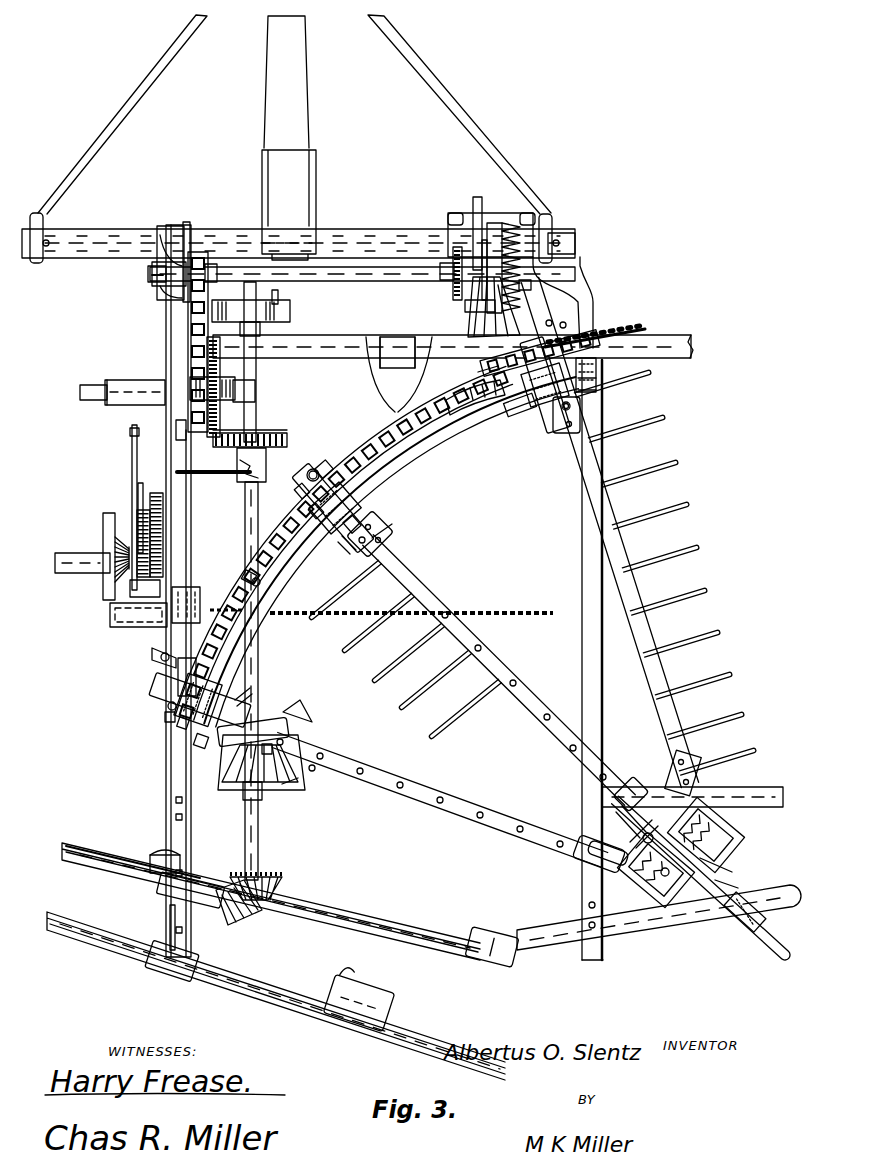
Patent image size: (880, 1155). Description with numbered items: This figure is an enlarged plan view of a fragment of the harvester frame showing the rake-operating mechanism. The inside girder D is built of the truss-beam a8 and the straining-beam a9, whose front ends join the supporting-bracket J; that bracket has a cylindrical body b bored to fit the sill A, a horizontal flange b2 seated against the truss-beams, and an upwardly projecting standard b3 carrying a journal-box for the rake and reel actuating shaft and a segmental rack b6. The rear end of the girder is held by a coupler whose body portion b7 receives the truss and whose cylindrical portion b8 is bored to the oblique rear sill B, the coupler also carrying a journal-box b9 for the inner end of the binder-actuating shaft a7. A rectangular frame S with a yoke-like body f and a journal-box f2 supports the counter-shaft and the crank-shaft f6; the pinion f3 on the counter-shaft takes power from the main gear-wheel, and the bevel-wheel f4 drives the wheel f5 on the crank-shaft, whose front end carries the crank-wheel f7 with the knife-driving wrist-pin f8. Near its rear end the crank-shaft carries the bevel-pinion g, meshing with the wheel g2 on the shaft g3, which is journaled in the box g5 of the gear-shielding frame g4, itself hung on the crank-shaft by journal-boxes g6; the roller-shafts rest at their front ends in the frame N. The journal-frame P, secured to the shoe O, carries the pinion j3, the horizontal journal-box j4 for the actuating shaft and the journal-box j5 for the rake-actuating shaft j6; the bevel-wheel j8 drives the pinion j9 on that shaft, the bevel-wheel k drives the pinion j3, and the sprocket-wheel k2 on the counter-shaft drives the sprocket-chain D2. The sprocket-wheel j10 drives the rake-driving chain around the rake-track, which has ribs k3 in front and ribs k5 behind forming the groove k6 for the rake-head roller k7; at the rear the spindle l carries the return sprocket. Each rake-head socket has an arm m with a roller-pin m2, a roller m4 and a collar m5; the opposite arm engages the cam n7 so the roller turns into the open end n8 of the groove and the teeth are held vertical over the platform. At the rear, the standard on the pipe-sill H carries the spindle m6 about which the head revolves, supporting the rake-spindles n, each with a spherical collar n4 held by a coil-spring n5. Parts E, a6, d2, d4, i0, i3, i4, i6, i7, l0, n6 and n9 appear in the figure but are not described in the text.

The sill A is at (382, 240).
The rear sill B is at (276, 996).
The inside girder D is at (167, 787).
The sprocket-chain D2 is at (186, 320).
The lower frame bar E is at (352, 896).
The rear pipe-sill H is at (632, 1000).
The supporting-bracket J is at (148, 268).
The frame N is at (784, 797).
The shoe O is at (563, 302).
The journal-frame P is at (470, 225).
The rectangular frame S is at (256, 392).
The drive shaft a6 is at (74, 572).
The binder-actuating shaft a7 is at (106, 860).
The truss-beam a8 is at (183, 594).
The straining-beam a9 is at (88, 385).
The cylindrical body portion b is at (170, 232).
The horizontal flange b2 is at (152, 276).
The standard b3 is at (162, 290).
The segmental rack b6 is at (186, 222).
The body portion b7 is at (182, 927).
The cylindrical portion b8 is at (165, 965).
The journal-box b9 is at (166, 890).
The clamp d2 is at (338, 997).
The rack d4 is at (588, 334).
The yoke-like body portion f is at (212, 388).
The journal-box f2 is at (258, 368).
The pinion f3 is at (190, 511).
The bevel-wheel f4 is at (213, 440).
The wheel f5 is at (272, 440).
The crank-shaft f6 is at (245, 514).
The crank-wheel f7 is at (240, 304).
The knife-driving wrist-pin f8 is at (280, 294).
The bevel-pinion g is at (226, 752).
The wheel g2 is at (297, 710).
The shaft g3 is at (232, 922).
The gear-shielding frame g4 is at (282, 784).
The journal-box g5 is at (312, 770).
The journal-boxes g6 is at (258, 722).
The bracket i0 is at (385, 527).
The bolt i3 is at (248, 747).
The lug i4 is at (248, 576).
The pin i6 is at (297, 489).
The roller i7 is at (310, 474).
The pinion j3 is at (480, 294).
The horizontal journal-box j4 is at (487, 245).
The horizontal journal-box j5 is at (476, 309).
The rake-actuating shaft j6 is at (485, 352).
The bevel-wheel j8 is at (506, 232).
The pinion j9 is at (470, 322).
The sprocket-wheel j10 is at (478, 372).
The bevel-wheel k is at (453, 287).
The sprocket-wheel k2 is at (186, 366).
The ribs k3 is at (324, 463).
The ribs k5 is at (270, 595).
The groove k6 is at (343, 279).
The rake-head roller k7 is at (372, 505).
The spindle l is at (152, 654).
The bracket l0 is at (556, 418).
The arm m is at (358, 512).
The roller-pin m2 is at (683, 883).
The roller m4 is at (315, 510).
The collar m5 is at (570, 328).
The horizontal spindle m6 is at (733, 884).
The rake-spindles n is at (620, 842).
The spherically-formed collar n4 is at (675, 862).
The coil-spring n5 is at (720, 864).
The tines n6 is at (728, 622).
The cam n7 is at (475, 405).
The open end n8 is at (520, 405).
The link n9 is at (651, 840).